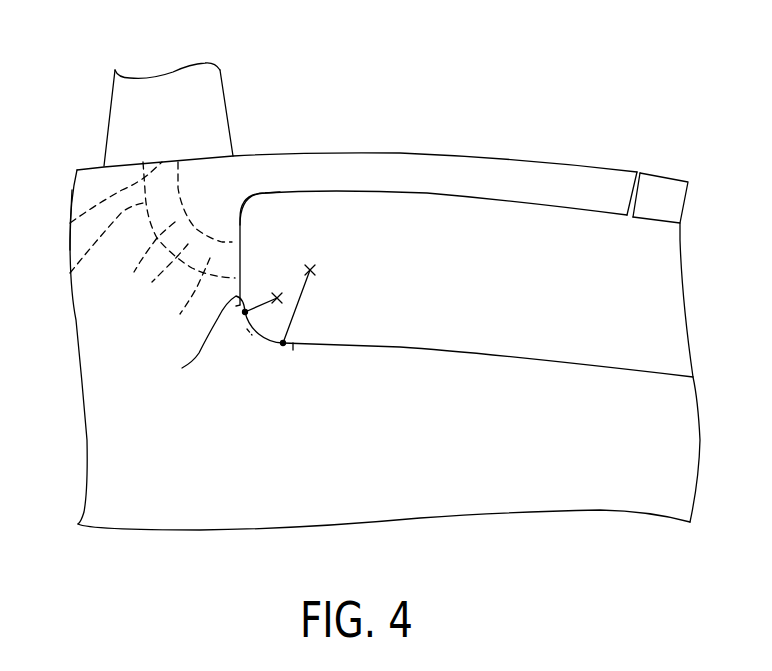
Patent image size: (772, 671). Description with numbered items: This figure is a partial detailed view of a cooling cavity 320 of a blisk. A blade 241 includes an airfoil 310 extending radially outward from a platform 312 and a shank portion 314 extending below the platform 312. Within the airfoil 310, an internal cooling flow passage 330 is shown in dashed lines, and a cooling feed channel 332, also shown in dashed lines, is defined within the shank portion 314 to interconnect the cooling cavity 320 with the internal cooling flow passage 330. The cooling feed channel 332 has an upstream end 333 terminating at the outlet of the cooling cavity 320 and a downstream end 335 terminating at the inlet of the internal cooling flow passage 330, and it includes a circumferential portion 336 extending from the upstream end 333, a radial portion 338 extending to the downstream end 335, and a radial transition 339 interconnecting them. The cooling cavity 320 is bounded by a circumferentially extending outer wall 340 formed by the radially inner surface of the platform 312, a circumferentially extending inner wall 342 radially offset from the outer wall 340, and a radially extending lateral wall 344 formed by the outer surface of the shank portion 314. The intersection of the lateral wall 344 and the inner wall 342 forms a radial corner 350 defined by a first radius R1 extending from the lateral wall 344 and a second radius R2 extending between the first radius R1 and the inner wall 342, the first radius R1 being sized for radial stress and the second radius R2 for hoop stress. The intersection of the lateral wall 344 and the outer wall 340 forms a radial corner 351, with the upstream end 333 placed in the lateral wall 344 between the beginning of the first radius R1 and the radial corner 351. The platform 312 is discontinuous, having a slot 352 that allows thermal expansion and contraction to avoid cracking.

The blade 241 is at (200, 70).
The airfoil 310 is at (121, 137).
The internal cooling flow passage 330 is at (208, 108).
The platform 312 is at (385, 168).
The slot 352 is at (641, 172).
The radial corner 351 is at (247, 203).
The upstream end 333 is at (232, 252).
The downstream end 335 is at (68, 223).
The radial portion 338 is at (68, 275).
The cooling feed channel 332 is at (170, 228).
The radial transition 339 is at (162, 283).
The circumferential portion 336 is at (182, 305).
The shank portion 314 is at (88, 318).
The lateral wall 344 is at (182, 368).
The radial corner 350 is at (264, 343).
The outer wall 340 is at (482, 201).
The inner wall 342 is at (508, 353).
The cooling cavity 320 is at (612, 312).
The first radius R1 is at (253, 302).
The second radius R2 is at (300, 300).